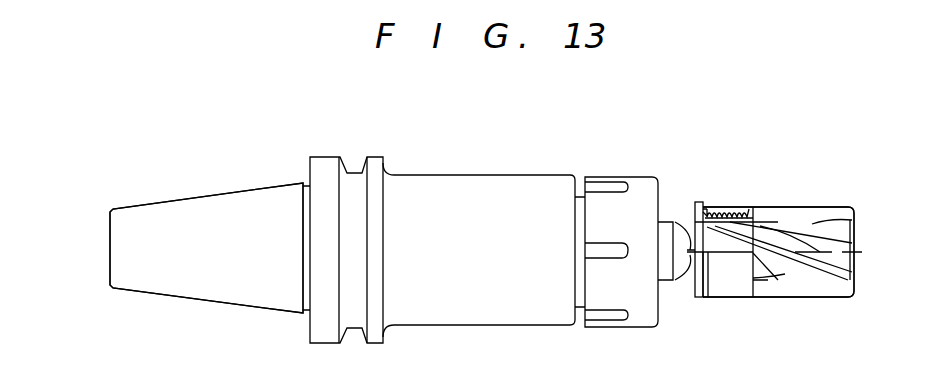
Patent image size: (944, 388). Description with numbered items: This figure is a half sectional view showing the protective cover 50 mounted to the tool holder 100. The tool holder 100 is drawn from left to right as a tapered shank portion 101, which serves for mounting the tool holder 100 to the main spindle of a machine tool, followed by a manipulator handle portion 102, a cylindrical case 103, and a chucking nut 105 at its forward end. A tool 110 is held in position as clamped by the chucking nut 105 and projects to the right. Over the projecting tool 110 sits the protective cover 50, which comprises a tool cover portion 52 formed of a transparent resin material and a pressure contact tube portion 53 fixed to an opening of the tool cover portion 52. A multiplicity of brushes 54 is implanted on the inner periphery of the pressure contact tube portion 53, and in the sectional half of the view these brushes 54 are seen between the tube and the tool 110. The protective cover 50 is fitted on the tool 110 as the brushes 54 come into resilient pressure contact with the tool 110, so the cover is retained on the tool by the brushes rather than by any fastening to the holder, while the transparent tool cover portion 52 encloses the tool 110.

The tool holder 100 is at (283, 166).
The tapered shank portion 101 is at (183, 212).
The manipulator handle portion 102 is at (325, 157).
The cylindrical case 103 is at (482, 183).
The chucking nut 105 is at (616, 177).
The protective cover 50 is at (836, 192).
The tool cover portion 52 is at (790, 207).
The pressure contact tube portion 53 is at (730, 297).
The brushes 54 is at (725, 208).
The tool 110 is at (790, 280).